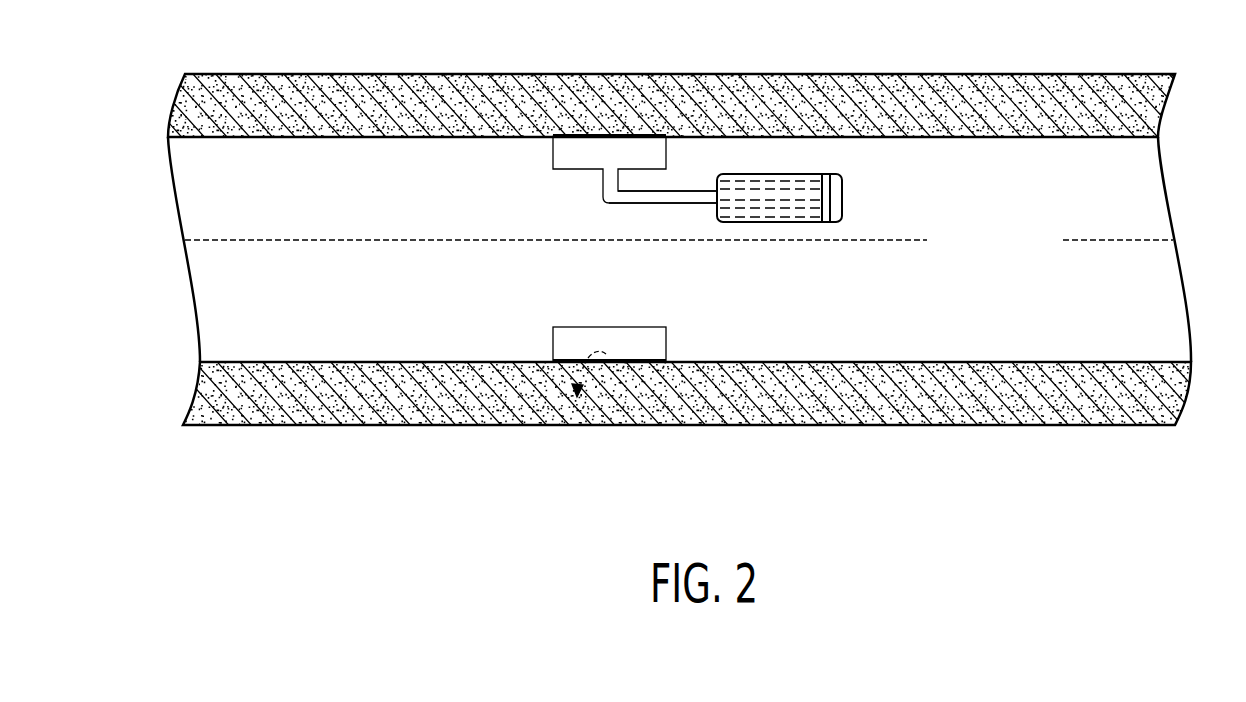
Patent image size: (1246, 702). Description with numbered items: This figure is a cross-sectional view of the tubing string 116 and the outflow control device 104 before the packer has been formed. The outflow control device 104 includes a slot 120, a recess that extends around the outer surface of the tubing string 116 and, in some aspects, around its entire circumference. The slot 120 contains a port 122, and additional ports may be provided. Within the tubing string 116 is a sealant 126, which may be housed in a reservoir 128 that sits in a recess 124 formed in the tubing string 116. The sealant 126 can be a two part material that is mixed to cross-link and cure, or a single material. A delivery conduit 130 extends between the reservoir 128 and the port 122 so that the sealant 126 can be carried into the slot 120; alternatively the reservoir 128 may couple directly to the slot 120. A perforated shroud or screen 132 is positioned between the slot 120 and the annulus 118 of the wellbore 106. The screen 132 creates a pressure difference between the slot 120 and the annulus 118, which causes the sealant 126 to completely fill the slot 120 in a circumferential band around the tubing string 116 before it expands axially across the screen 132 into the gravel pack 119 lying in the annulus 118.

The outflow control device 104 is at (577, 396).
The wellbore 106 is at (990, 84).
The tubing string 116 is at (378, 133).
The annulus 118 is at (260, 387).
The gravel pack 119 is at (1032, 403).
The slot 120 is at (643, 352).
The port 122 is at (610, 173).
The recess 124 is at (1142, 175).
The sealant 126 is at (758, 197).
The reservoir 128 is at (808, 173).
The delivery conduit 130 is at (673, 190).
The screen 132 is at (606, 425).